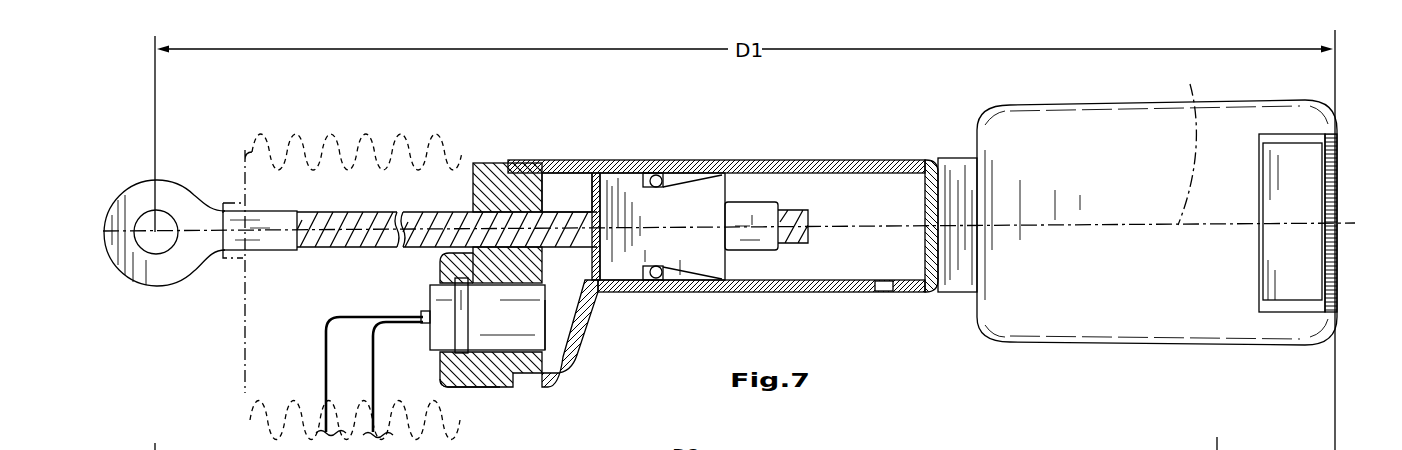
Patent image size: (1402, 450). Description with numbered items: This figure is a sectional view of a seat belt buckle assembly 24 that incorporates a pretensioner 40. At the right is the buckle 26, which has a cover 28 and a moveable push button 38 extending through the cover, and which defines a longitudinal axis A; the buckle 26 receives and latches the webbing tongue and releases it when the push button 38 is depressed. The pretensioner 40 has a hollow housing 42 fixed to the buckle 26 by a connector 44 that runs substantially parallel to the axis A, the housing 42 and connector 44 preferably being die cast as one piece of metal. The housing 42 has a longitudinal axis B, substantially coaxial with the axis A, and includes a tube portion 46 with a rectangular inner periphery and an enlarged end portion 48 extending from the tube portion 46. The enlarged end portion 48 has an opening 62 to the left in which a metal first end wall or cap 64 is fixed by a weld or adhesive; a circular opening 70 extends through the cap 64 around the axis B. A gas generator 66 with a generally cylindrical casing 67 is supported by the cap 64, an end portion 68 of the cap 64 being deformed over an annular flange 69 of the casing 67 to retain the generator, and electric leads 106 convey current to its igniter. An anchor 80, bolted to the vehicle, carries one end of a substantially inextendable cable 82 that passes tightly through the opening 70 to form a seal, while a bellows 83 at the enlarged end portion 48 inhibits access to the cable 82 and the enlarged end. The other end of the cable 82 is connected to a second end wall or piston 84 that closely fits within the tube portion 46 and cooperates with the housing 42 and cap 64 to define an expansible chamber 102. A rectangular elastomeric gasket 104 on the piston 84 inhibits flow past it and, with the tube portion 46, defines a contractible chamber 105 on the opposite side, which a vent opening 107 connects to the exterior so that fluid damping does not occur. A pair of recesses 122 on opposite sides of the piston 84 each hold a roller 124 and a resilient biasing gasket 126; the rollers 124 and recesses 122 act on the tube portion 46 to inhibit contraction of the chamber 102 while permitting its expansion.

The buckle assembly 24 is at (1159, 198).
The buckle 26 is at (1067, 100).
The cover 28 is at (1250, 118).
The push button 38 is at (1305, 173).
The pretensioner 40 is at (723, 234).
The housing 42 is at (733, 340).
The connector 44 is at (966, 158).
The tube portion 46 is at (893, 158).
The enlarged end portion 48 is at (547, 330).
The opening 62 is at (558, 160).
The end cap 64 is at (490, 396).
The gas generator 66 is at (438, 330).
The casing 67 is at (551, 377).
The end portion 68 is at (436, 362).
The annular flange 69 is at (440, 265).
The circular opening 70 is at (482, 163).
The anchor 80 is at (151, 193).
The cable 82 is at (443, 227).
The bellows 83 is at (291, 130).
The piston 84 is at (704, 205).
The expansible chamber 102 is at (588, 204).
The gasket 104 is at (594, 172).
The contractible chamber 105 is at (888, 211).
The electric leads 106 is at (372, 323).
The vent opening 107 is at (884, 292).
The recesses 122 is at (688, 185).
The roller 124 is at (663, 178).
The biasing gasket 126 is at (656, 175).
The longitudinal axis of the buckle A is at (1187, 143).
The longitudinal axis of the housing B is at (748, 240).